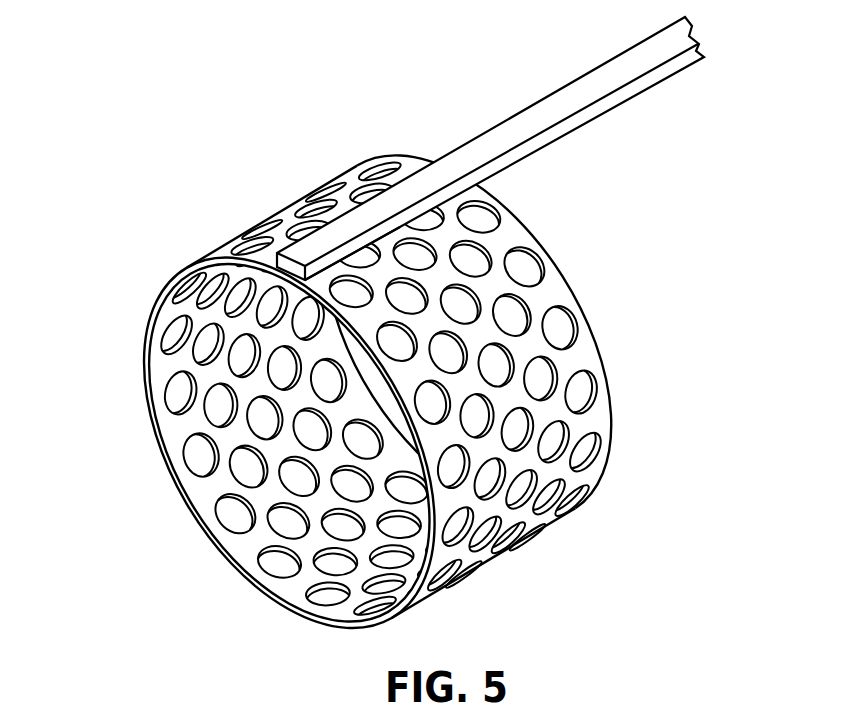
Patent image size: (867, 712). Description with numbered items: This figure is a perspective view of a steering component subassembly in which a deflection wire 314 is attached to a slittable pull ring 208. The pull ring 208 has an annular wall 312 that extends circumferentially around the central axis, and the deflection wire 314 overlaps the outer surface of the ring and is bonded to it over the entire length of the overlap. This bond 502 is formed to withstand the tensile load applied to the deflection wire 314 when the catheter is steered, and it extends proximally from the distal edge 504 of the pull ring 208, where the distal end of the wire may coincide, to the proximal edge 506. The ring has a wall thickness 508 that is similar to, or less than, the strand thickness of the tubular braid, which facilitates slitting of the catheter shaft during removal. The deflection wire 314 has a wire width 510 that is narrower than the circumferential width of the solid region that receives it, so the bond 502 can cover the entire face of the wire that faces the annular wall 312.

The pull ring 208 is at (394, 395).
The annular wall 312 is at (542, 473).
The deflection wire 314 is at (495, 147).
The bond 502 is at (360, 253).
The distal edge 504 is at (169, 453).
The proximal edge 506 is at (573, 291).
The wall thickness 508 is at (277, 517).
The wire width 510 is at (597, 15).